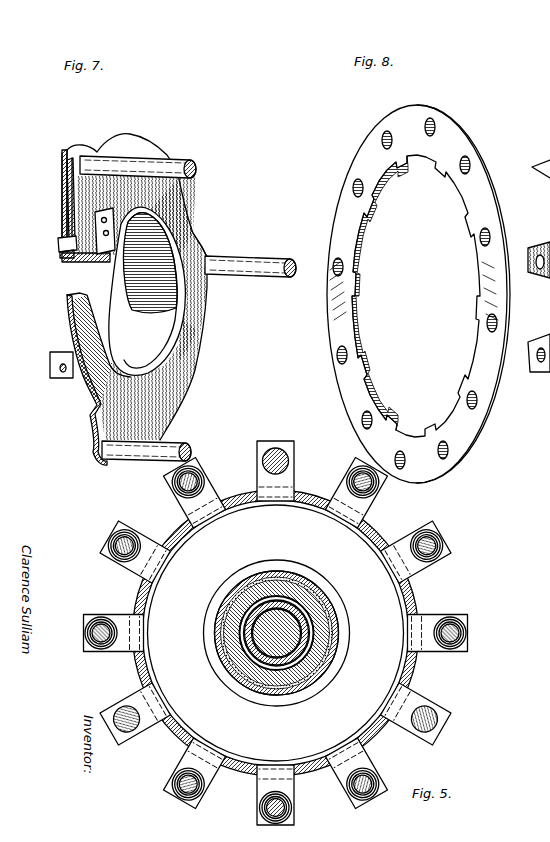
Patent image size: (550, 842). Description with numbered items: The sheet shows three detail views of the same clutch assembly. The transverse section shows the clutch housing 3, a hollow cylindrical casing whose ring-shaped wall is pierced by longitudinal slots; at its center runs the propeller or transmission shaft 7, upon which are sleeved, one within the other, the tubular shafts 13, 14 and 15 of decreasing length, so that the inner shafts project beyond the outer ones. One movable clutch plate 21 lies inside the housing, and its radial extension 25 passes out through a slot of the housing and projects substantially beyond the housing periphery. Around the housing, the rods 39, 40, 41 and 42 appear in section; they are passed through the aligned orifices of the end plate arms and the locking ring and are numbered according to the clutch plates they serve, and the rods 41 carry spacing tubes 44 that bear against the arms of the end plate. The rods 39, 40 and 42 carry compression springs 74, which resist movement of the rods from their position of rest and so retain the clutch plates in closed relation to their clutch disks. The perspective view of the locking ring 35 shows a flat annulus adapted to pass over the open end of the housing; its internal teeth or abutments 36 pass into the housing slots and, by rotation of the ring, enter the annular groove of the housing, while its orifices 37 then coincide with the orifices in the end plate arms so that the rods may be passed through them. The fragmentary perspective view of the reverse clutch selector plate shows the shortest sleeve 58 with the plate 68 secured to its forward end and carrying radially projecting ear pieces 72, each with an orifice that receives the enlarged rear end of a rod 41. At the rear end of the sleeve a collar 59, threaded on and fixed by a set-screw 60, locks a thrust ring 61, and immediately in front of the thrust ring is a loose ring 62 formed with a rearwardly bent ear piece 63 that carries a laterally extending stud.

In FIG. 5, the clutch housing 3 is at (136, 586).
In FIG. 5, the propeller or transmission shaft 7 is at (300, 633).
In FIG. 5, the tubular shaft 13 is at (247, 640).
In FIG. 5, the tubular shaft 14 is at (222, 612).
In FIG. 5, the tubular shaft 15 is at (305, 585).
In FIG. 5, the plate 21 is at (276, 633).
In FIG. 5, the radial extension 25 is at (150, 550).
In FIG. 8, the locking ring 35 is at (478, 210).
In FIG. 8, the internal teeth or abutments 36 is at (437, 176).
In FIG. 8, the orifices 37 is at (435, 124).
In FIG. 5, the rod 39 is at (112, 538).
In FIG. 5, the rod 40 is at (356, 482).
In FIG. 7, the rod 41 is at (172, 163).
In FIG. 5, the rod 41 is at (280, 455).
In FIG. 5, the rod 42 is at (178, 490).
In FIG. 5, the spacing tube 44 is at (292, 594).
In FIG. 7, the sleeve 58 is at (100, 262).
In FIG. 7, the collar 59 is at (60, 231).
In FIG. 7, the set-screw 60 is at (60, 249).
In FIG. 7, the thrust ring 61 is at (76, 240).
In FIG. 7, the loose ring 62 is at (72, 218).
In FIG. 7, the ear piece 63 is at (50, 358).
In FIG. 7, the plate 68 is at (194, 362).
In FIG. 7, the ear piece 72 is at (85, 150).
In FIG. 5, the compression spring 74 is at (205, 486).